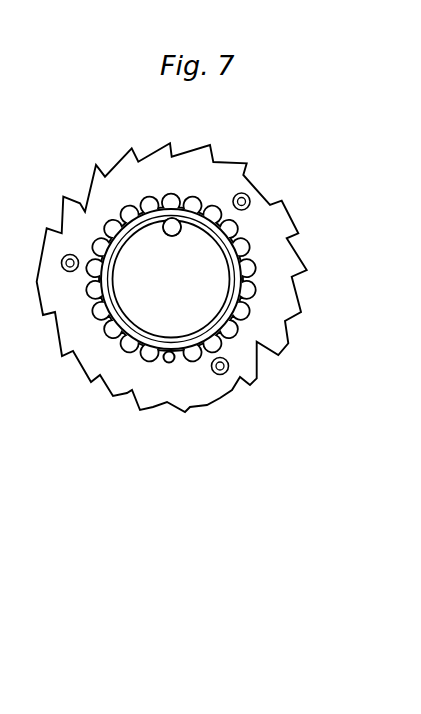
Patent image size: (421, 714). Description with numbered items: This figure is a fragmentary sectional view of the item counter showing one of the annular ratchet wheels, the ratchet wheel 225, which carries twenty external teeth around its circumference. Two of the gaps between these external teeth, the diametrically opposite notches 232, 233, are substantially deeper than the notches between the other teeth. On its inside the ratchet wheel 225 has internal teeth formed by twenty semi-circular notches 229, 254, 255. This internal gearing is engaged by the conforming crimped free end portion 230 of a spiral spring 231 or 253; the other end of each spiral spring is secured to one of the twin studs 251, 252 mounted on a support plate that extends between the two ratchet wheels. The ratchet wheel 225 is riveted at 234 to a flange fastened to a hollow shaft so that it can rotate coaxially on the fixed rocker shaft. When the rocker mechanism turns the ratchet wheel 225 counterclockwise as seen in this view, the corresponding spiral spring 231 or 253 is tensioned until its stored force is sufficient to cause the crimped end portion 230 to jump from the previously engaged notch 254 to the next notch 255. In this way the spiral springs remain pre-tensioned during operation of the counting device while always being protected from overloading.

The ratchet wheel 225 is at (270, 265).
The semi-circular notch 229 is at (103, 323).
The crimped free end portion 230 is at (169, 362).
The spiral spring 231 is at (223, 330).
The notch 232 is at (84, 211).
The notch 233 is at (258, 360).
The rivet 234 is at (62, 263).
The twin stud 251 is at (180, 222).
The twin stud 252 is at (172, 227).
The spiral spring 253 is at (224, 339).
The semi-circular notch 254 is at (176, 358).
The semi-circular notch 255 is at (143, 357).